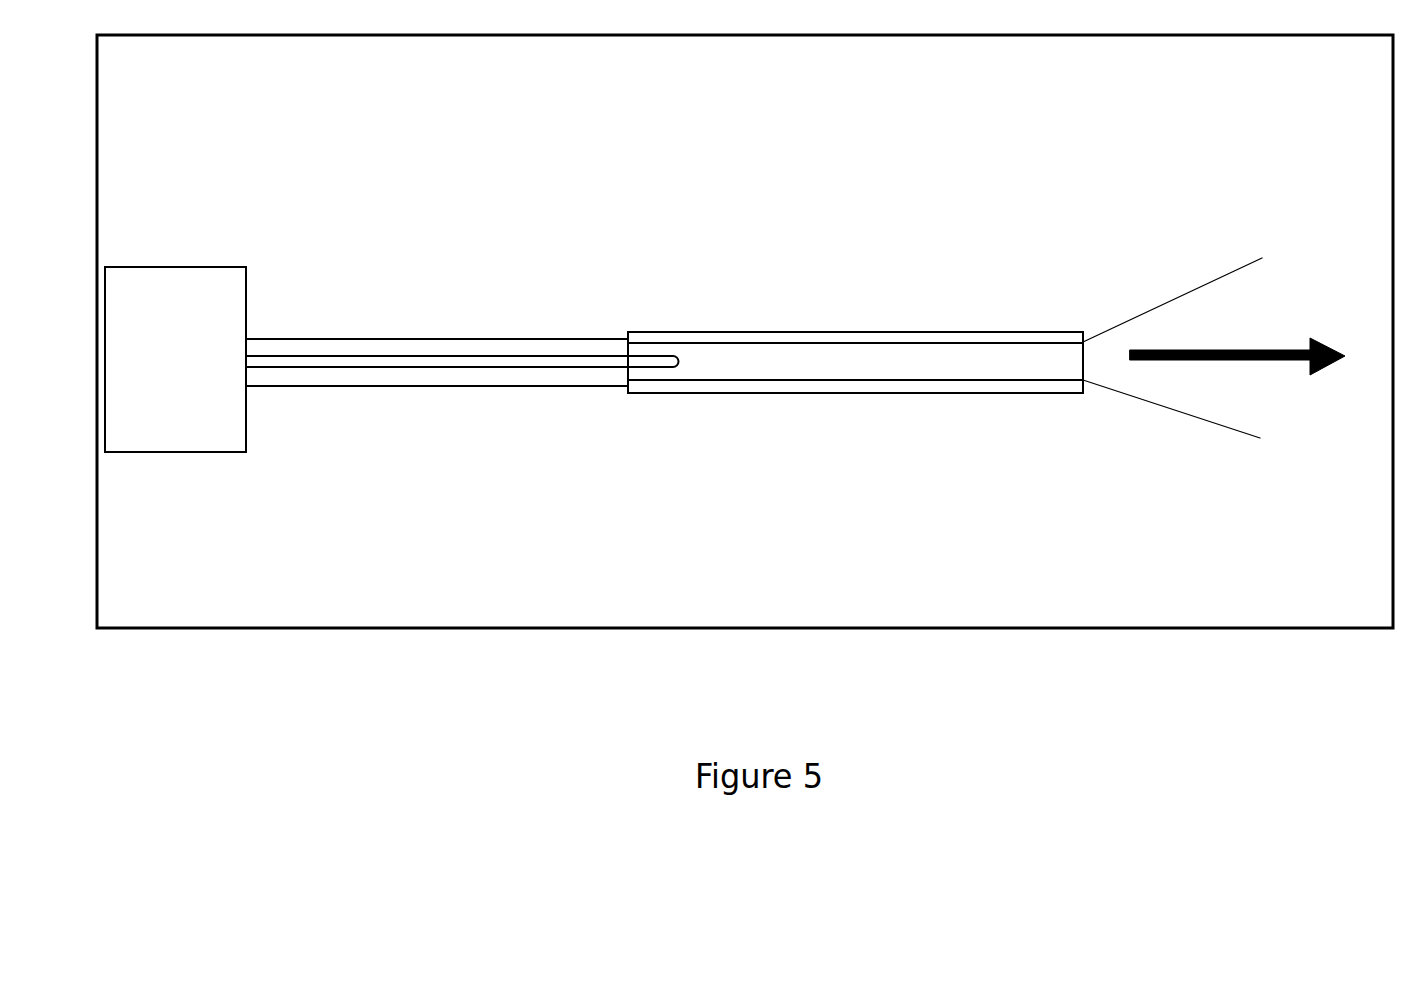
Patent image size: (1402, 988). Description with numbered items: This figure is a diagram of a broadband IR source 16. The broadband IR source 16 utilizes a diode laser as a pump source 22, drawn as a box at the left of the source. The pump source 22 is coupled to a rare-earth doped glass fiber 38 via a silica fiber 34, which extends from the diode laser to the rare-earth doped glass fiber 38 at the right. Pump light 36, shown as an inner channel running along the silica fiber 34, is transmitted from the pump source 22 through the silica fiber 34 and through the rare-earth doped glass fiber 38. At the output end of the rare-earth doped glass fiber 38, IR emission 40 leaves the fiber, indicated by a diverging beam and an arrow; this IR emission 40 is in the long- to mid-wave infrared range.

The broadband IR source 16 is at (418, 630).
The pump source 22 is at (120, 428).
The silica fiber 34 is at (477, 345).
The pump light 36 is at (547, 362).
The rare-earth doped glass fiber 38 is at (733, 332).
The IR emission 40 is at (1233, 320).